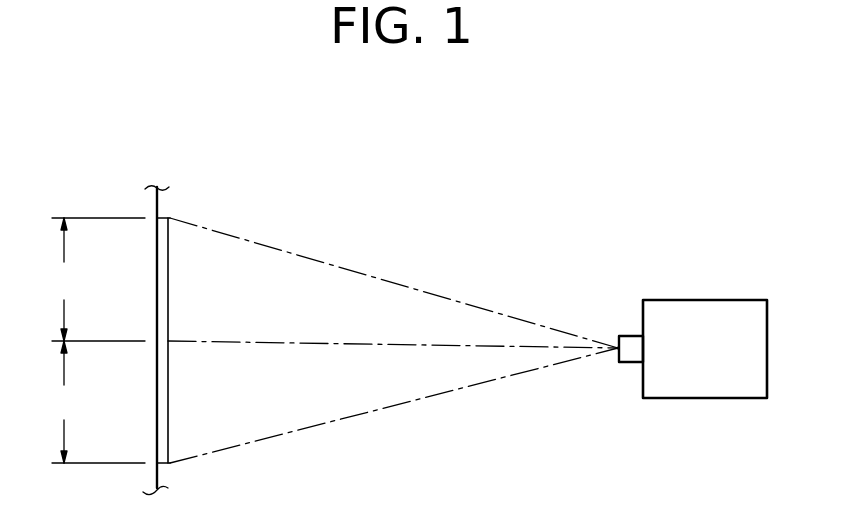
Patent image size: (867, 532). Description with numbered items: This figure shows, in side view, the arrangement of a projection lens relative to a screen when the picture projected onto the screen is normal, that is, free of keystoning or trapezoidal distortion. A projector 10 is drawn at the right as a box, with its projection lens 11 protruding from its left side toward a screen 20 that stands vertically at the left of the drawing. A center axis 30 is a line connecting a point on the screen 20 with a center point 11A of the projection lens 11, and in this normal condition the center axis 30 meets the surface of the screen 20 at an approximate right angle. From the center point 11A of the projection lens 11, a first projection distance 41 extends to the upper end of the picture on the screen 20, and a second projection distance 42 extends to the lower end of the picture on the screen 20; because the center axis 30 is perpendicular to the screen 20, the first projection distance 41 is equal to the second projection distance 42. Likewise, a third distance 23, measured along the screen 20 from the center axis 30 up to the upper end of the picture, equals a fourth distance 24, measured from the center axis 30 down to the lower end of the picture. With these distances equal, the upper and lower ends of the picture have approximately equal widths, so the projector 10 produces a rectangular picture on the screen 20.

The projector 10 is at (723, 398).
The projection lens 11 is at (632, 362).
The center point 11A is at (617, 350).
The screen 20 is at (168, 288).
The third distance 23 is at (96, 279).
The fourth distance 24 is at (96, 402).
The center axis 30 is at (293, 343).
The first projection distance 41 is at (422, 292).
The second projection distance 42 is at (422, 400).